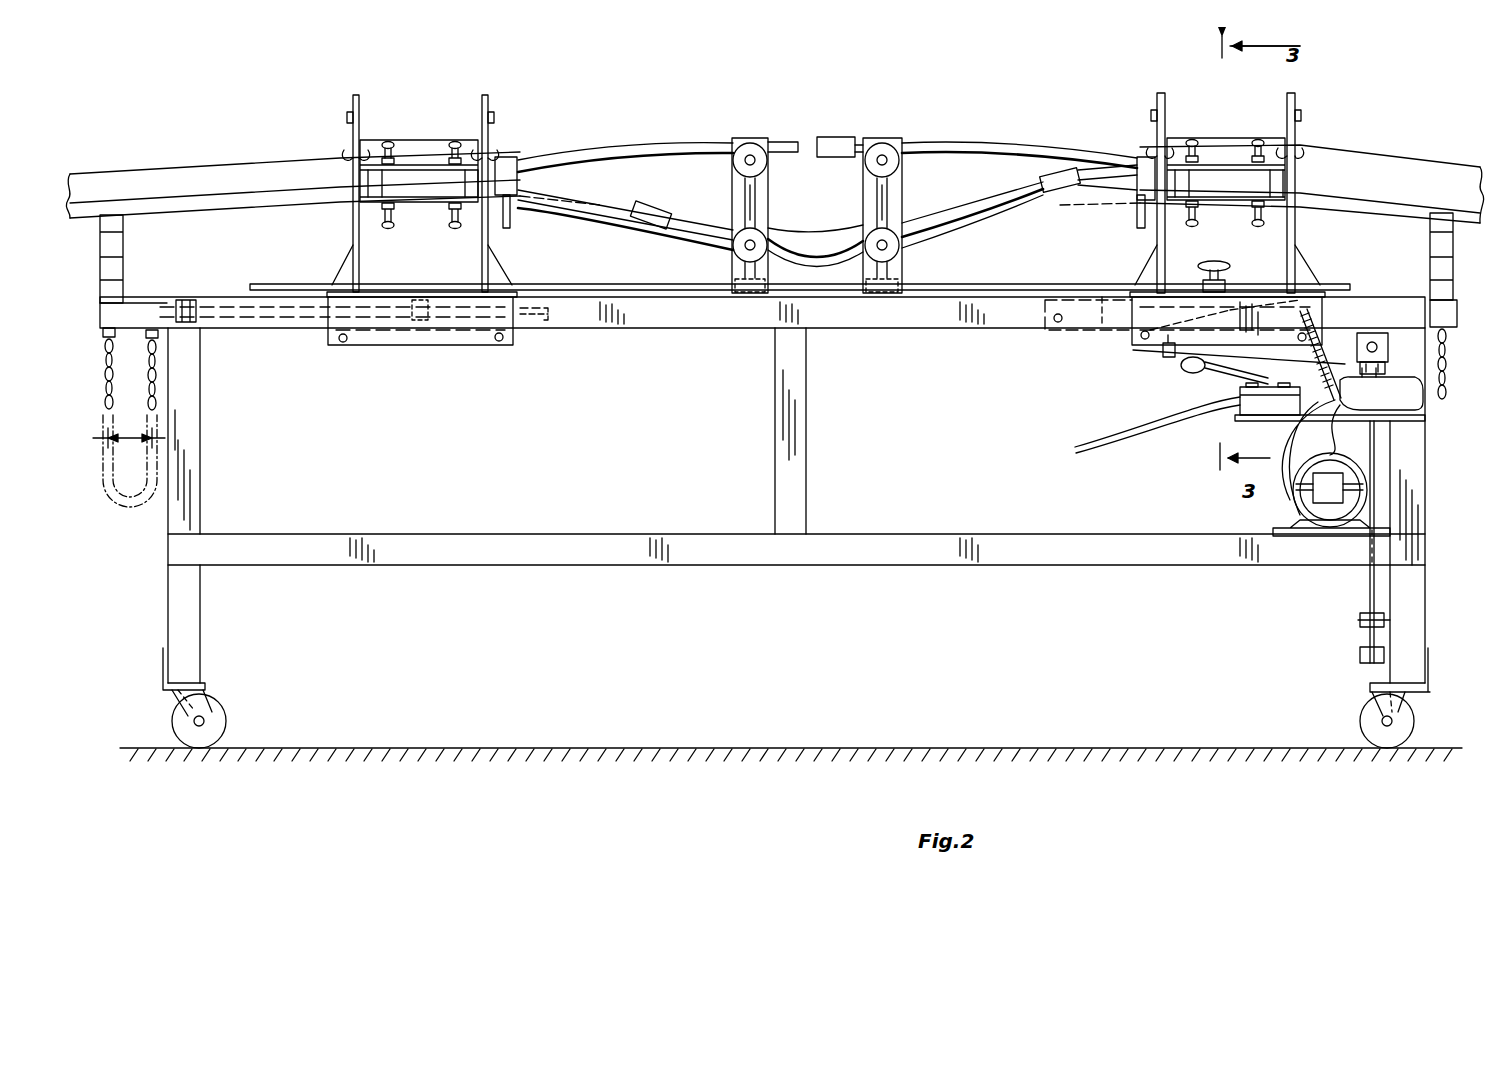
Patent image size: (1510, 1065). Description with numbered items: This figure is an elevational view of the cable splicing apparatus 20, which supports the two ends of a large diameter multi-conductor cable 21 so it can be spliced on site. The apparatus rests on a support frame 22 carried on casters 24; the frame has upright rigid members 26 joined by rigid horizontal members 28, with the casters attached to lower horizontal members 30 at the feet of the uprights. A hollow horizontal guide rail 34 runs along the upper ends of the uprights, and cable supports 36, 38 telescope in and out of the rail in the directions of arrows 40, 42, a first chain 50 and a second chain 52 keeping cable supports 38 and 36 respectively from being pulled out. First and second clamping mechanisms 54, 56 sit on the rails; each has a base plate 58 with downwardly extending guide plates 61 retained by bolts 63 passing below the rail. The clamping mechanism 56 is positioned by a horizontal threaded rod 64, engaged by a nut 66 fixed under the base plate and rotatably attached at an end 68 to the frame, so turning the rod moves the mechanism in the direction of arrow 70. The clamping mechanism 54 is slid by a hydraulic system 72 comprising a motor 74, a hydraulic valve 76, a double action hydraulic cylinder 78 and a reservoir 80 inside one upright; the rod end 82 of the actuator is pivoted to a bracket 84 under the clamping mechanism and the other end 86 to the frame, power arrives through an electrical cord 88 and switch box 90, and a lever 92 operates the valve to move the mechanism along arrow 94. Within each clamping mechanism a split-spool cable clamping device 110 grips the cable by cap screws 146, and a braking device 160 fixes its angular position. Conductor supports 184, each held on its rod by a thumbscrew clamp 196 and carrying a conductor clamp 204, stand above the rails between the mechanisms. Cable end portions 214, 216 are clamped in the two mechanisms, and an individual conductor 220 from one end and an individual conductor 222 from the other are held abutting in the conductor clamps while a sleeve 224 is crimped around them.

The apparatus 20 is at (1330, 135).
The multi-conductor cable 21 is at (234, 172).
The support frame 22 is at (165, 544).
The casters 24 is at (214, 712).
The upright rigid members 26 is at (200, 497).
The rigid horizontal members 28 is at (598, 533).
The rigid horizontal members 30 is at (205, 682).
The second hollow horizontal guide rail 34 is at (886, 329).
The cable support 36 is at (1428, 245).
The cable support 38 is at (125, 268).
The arrow 40 is at (130, 437).
The arrow 42 is at (1480, 422).
The first chain 50 is at (150, 378).
The second chain 52 is at (1446, 370).
The first clamping mechanism 54 is at (1297, 109).
The second clamping mechanism 56 is at (352, 128).
The base plate 58 is at (513, 291).
The second pair of guide plates 61 is at (378, 346).
The bolts 63 is at (343, 343).
The threaded rod 64 is at (540, 322).
The nut 66 is at (428, 322).
The end 68 is at (195, 325).
The arrow 70 is at (450, 372).
The hydraulic system 72 is at (1292, 498).
The motor 74 is at (1323, 506).
The hydraulic valve 76 is at (1380, 386).
The double action hydraulic cylinder 78 is at (1196, 374).
The reservoir 80 is at (1420, 543).
The end 82 is at (1058, 313).
The bracket 84 is at (1102, 296).
The end 86 is at (1372, 332).
The electrical cord 88 is at (1214, 411).
The switch box 90 is at (1262, 419).
The lever 92 is at (1322, 322).
The arrow 94 is at (1120, 373).
The cable clamping device 110 is at (416, 138).
The cap screws 146 is at (392, 138).
The braking device 160 is at (518, 214).
The conductor supports 184 is at (783, 142).
The conductor support thumbscrew clamp 196 is at (732, 256).
The conductor clamp 204 is at (744, 150).
The cable end portion 214 is at (1144, 158).
The cable end portion 216 is at (510, 155).
The individual conductor 220 is at (640, 150).
The individual conductor 222 is at (946, 150).
The sleeve 224 is at (838, 136).